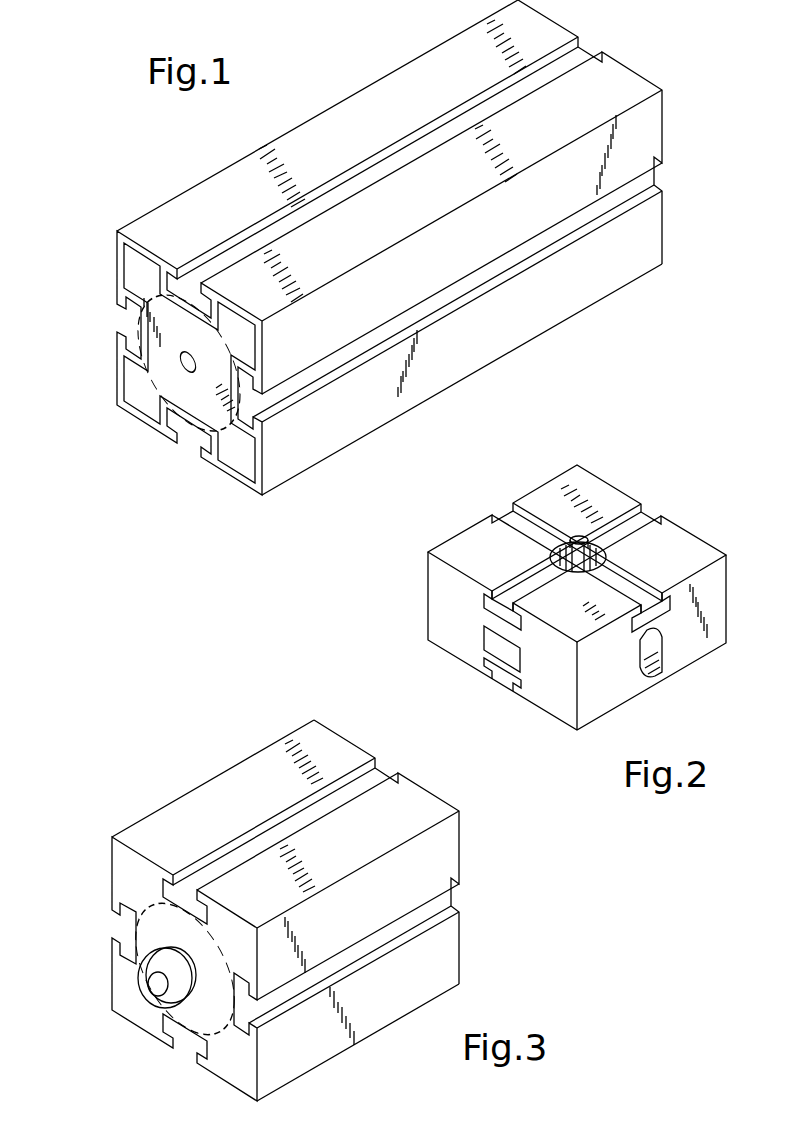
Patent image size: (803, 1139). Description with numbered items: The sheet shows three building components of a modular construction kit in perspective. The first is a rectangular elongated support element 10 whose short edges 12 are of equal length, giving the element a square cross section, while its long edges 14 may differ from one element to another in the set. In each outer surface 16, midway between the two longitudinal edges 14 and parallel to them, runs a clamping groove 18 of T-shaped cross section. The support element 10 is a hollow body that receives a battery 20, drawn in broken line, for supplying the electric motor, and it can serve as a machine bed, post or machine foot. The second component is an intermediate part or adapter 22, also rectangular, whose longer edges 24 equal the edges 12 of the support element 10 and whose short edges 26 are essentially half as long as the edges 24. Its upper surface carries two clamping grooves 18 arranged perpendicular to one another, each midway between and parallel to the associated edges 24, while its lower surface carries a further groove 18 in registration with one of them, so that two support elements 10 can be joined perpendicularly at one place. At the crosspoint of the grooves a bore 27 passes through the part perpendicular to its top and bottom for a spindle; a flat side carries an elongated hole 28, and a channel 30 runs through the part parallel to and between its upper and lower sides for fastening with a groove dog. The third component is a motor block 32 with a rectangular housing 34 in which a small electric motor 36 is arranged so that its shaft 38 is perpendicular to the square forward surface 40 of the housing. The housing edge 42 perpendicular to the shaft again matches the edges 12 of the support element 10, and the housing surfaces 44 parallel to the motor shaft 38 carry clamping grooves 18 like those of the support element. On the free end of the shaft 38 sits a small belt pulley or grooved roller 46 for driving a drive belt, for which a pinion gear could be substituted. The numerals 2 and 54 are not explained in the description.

In FIG. 1, the support element 10 is at (290, 104).
In FIG. 1, the short edges 12 is at (634, 61).
In FIG. 1, the long edges 14 is at (195, 182).
In FIG. 1, the outer surface 16 is at (388, 90).
In FIG. 1, the clamping groove 18 is at (578, 56).
In FIG. 2, the clamping groove 18 is at (507, 597).
In FIG. 3, the clamping groove 18 is at (118, 923).
In FIG. 1, the battery 20 is at (148, 423).
In FIG. 2, the intermediate part 22 is at (684, 514).
In FIG. 2, the longer edges 24 is at (455, 530).
In FIG. 2, the short edges 26 is at (428, 602).
In FIG. 2, the bore 27 is at (577, 535).
In FIG. 2, the groove 2 is at (550, 628).
In FIG. 2, the elongated hole 28 is at (660, 650).
In FIG. 2, the channel 30 is at (502, 643).
In FIG. 3, the motor block 32 is at (214, 758).
In FIG. 3, the housing 34 is at (445, 957).
In FIG. 3, the electric motor 36 is at (227, 1030).
In FIG. 3, the motor shaft 38 is at (153, 985).
In FIG. 3, the forward surface 40 is at (248, 1067).
In FIG. 3, the housing edge 42 is at (110, 853).
In FIG. 3, the housing surfaces 44 is at (320, 745).
In FIG. 3, the belt pulley 46 is at (148, 972).
In FIG. 3, the slot wall 54 is at (357, 873).